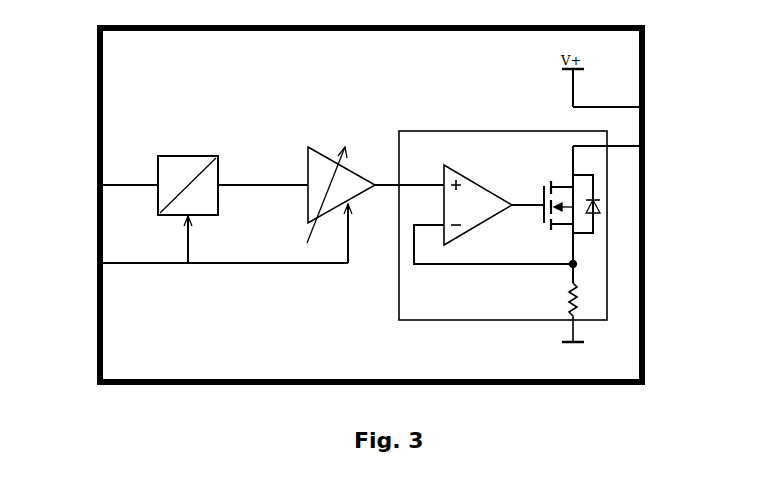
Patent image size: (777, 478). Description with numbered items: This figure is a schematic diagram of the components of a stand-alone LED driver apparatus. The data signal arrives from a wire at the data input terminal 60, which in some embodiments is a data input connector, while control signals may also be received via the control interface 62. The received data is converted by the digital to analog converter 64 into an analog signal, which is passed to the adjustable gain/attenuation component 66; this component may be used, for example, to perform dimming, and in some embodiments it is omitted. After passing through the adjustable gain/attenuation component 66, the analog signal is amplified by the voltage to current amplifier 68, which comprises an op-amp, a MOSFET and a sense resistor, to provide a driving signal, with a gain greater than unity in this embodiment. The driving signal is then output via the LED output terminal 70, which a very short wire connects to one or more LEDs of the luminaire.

The data input terminal 60 is at (97, 185).
The control interface 62 is at (97, 263).
The digital to analog converter 64 is at (222, 162).
The adjustable gain/attenuation component 66 is at (315, 150).
The voltage to current amplifier 68 is at (473, 131).
The LED output terminal 70 is at (647, 97).